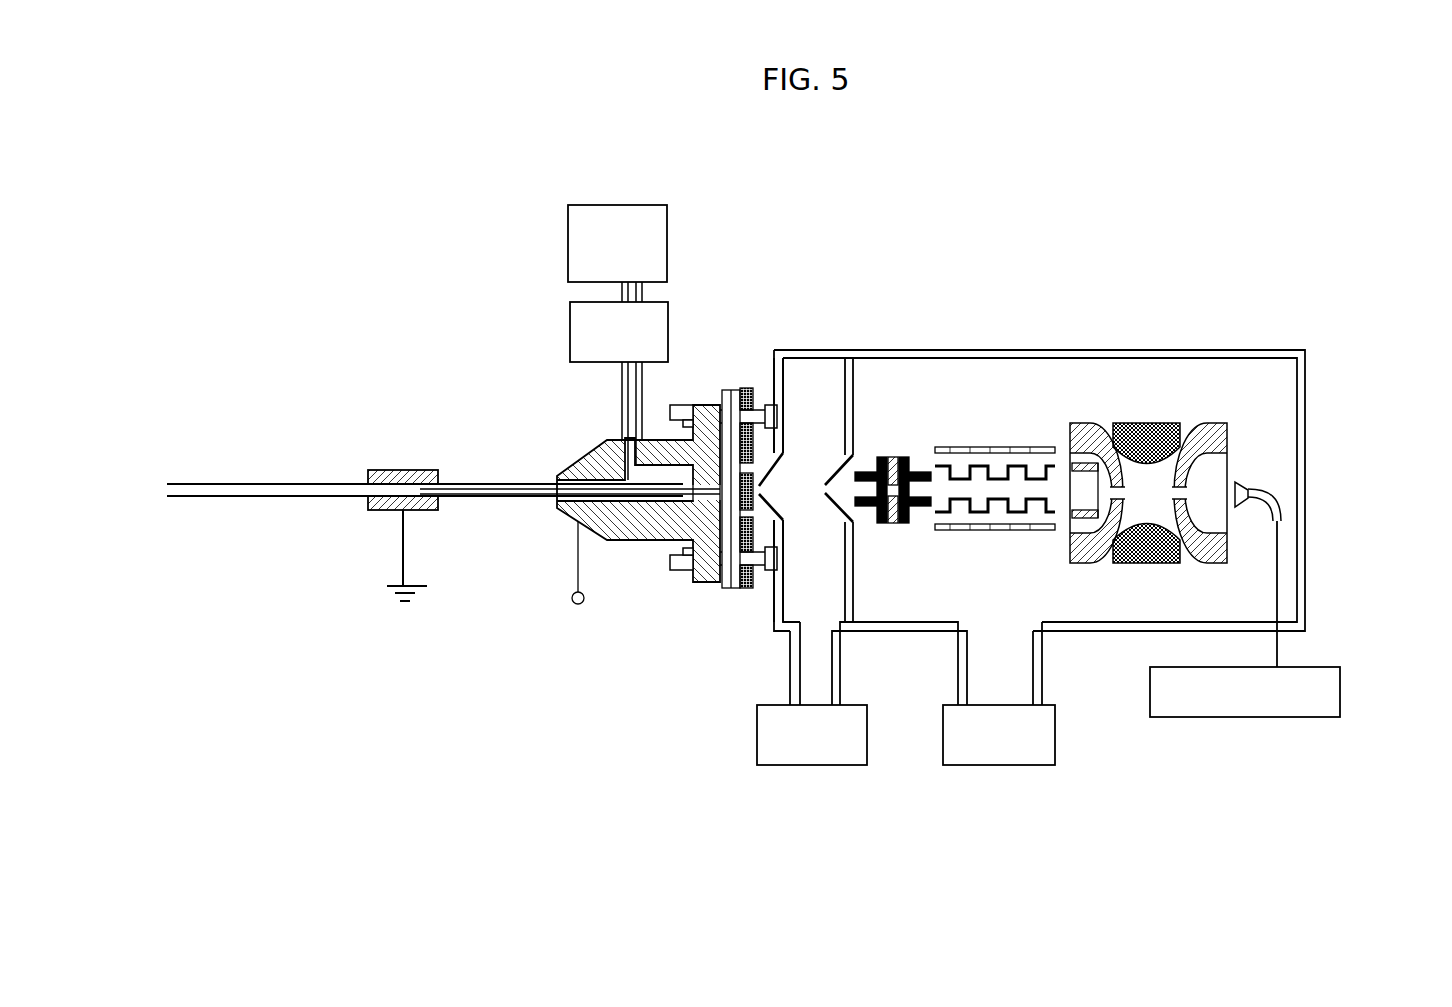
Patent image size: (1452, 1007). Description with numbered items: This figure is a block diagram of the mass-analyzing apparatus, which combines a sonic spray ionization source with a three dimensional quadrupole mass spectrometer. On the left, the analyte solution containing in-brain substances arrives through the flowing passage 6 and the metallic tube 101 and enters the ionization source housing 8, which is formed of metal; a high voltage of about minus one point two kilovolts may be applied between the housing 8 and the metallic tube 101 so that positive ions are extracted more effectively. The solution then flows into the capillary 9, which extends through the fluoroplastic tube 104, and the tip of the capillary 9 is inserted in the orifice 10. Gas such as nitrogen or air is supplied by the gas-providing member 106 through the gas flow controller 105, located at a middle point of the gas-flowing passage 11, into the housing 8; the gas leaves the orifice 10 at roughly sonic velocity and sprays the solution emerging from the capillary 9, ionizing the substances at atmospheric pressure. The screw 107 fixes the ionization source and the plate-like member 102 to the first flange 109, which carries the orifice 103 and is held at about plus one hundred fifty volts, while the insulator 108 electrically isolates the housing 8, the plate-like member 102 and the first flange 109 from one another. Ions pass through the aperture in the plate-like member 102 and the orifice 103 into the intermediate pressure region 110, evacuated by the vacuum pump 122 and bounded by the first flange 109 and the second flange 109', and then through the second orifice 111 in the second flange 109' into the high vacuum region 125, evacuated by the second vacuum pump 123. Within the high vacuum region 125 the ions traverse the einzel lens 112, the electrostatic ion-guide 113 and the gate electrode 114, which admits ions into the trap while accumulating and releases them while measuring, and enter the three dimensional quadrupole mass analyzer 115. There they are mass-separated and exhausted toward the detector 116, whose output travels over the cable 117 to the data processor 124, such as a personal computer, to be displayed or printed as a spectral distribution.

The flowing passage 6 is at (278, 490).
The ionization source housing 8 is at (593, 467).
The capillary 9 is at (528, 500).
The orifice 10 is at (707, 498).
The gas-flowing passage 11 is at (623, 403).
The metallic tube 101 is at (397, 470).
The plate-like member 102 is at (747, 386).
The orifice 103 is at (758, 497).
The fluoroplastic tube 104 is at (497, 500).
The gas flow controller 105 is at (570, 312).
The gas-providing member 106 is at (598, 213).
The screw 107 is at (672, 405).
The insulator 108 is at (736, 390).
The first flange 109 is at (802, 429).
The second flange 109' is at (899, 531).
The intermediate pressure region 110 is at (818, 383).
The second orifice 111 is at (823, 492).
The einzel lens 112 is at (893, 445).
The electrostatic ion-guide 113 is at (1000, 446).
The gate electrode 114 is at (1085, 492).
The three dimensional quadrupole mass analyzer 115 is at (1157, 438).
The detector 116 is at (1252, 496).
The cable 117 is at (1279, 583).
The vacuum pump 122 is at (828, 762).
The vacuum pump 123 is at (1017, 760).
The data processor 124 is at (1203, 717).
The high vacuum region 125 is at (935, 390).